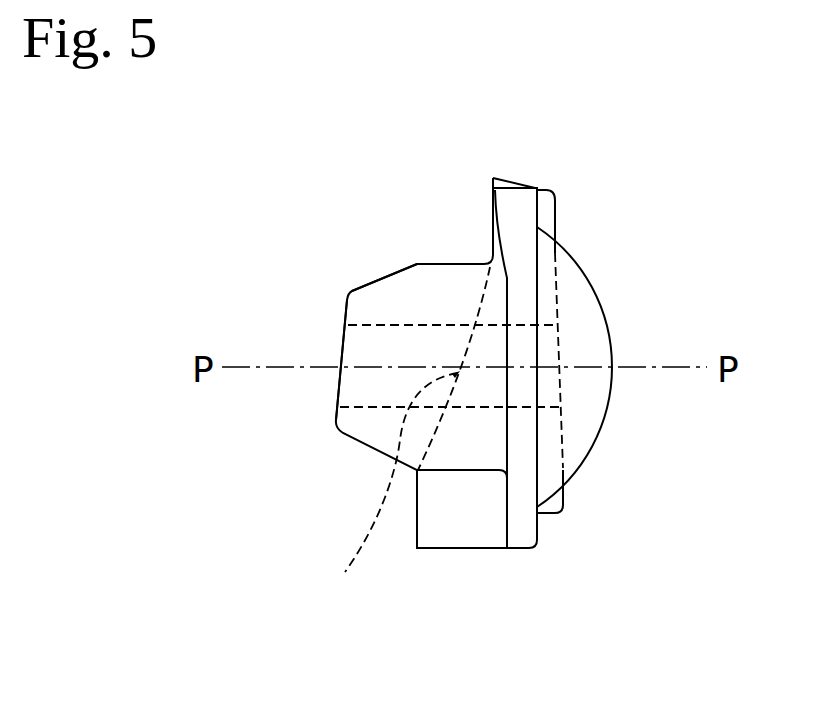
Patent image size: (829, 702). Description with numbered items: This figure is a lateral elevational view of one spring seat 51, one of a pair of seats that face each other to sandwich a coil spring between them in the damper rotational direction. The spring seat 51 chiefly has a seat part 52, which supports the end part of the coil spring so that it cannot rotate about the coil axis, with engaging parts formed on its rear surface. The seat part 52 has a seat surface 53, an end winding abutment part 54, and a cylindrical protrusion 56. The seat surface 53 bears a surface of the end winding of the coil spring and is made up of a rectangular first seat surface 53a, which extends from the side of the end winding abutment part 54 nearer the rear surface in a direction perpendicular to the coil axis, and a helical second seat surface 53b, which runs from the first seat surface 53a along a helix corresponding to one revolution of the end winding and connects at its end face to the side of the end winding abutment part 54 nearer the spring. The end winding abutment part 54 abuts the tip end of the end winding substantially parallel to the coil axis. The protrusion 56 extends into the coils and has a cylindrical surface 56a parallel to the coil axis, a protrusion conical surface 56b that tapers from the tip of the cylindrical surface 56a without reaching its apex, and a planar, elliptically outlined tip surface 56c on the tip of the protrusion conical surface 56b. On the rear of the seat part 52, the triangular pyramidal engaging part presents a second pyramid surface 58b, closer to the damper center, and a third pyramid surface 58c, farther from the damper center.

The spring seat 51 is at (681, 260).
The seat part 52 is at (313, 447).
The seat surface 53 is at (277, 577).
The first seat surface 53a is at (508, 528).
The second seat surface 53b is at (386, 442).
The end winding abutment part 54 is at (445, 532).
The cylindrical protrusion 56 is at (177, 183).
The cylindrical surface 56a is at (450, 262).
The protrusion conical surface 56b is at (382, 281).
The tip surface 56c is at (347, 312).
The second pyramid surface 58b is at (573, 429).
The third pyramid surface 58c is at (580, 328).